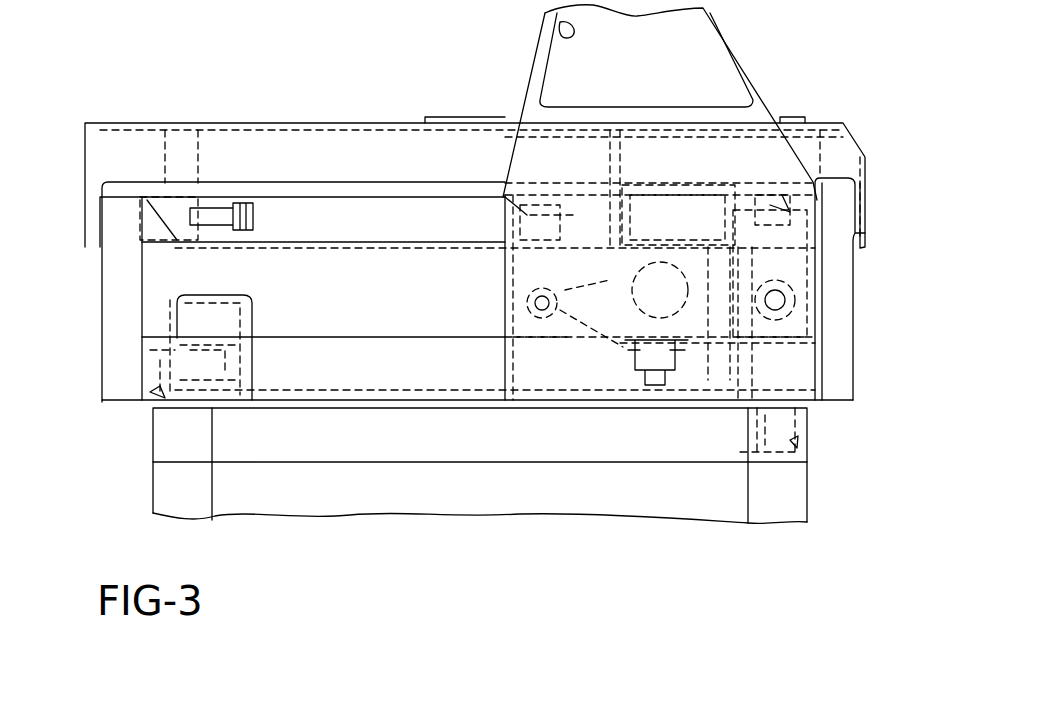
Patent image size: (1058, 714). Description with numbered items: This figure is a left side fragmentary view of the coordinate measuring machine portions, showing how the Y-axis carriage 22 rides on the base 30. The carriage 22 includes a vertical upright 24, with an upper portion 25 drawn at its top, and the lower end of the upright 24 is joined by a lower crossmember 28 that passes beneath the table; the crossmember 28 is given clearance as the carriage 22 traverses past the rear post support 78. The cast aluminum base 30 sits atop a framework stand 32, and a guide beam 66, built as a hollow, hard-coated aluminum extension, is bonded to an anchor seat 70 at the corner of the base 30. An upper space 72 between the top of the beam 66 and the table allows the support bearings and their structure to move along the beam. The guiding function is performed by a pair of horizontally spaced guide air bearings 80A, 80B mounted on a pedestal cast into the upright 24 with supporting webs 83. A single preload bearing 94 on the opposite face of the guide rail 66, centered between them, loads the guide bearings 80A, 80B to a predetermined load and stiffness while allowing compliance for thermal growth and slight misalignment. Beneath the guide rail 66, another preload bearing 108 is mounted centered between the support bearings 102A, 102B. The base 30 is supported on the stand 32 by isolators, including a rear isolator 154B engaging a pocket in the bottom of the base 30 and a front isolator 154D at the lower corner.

The Y-axis carriage 22 is at (503, 305).
The vertical upright 24 is at (533, 70).
The bracket hook 25 is at (560, 28).
The lower crossmember 28 is at (690, 185).
The base 30 is at (112, 283).
The framework stand 32 is at (140, 435).
The guide beam 66 is at (327, 326).
The anchor seat 70 is at (155, 328).
The upper space 72 is at (317, 233).
The rear post support 78 is at (200, 163).
The guide air bearing 80A is at (785, 305).
The guide air bearing 80B is at (537, 297).
The supporting web 83 is at (577, 327).
The preload bearing 94 is at (632, 270).
The support bearing 102A is at (790, 212).
The support bearing 102B is at (505, 198).
The preload bearing 108 is at (627, 362).
The rear isolator 154B is at (80, 383).
The fastener 154D is at (795, 446).